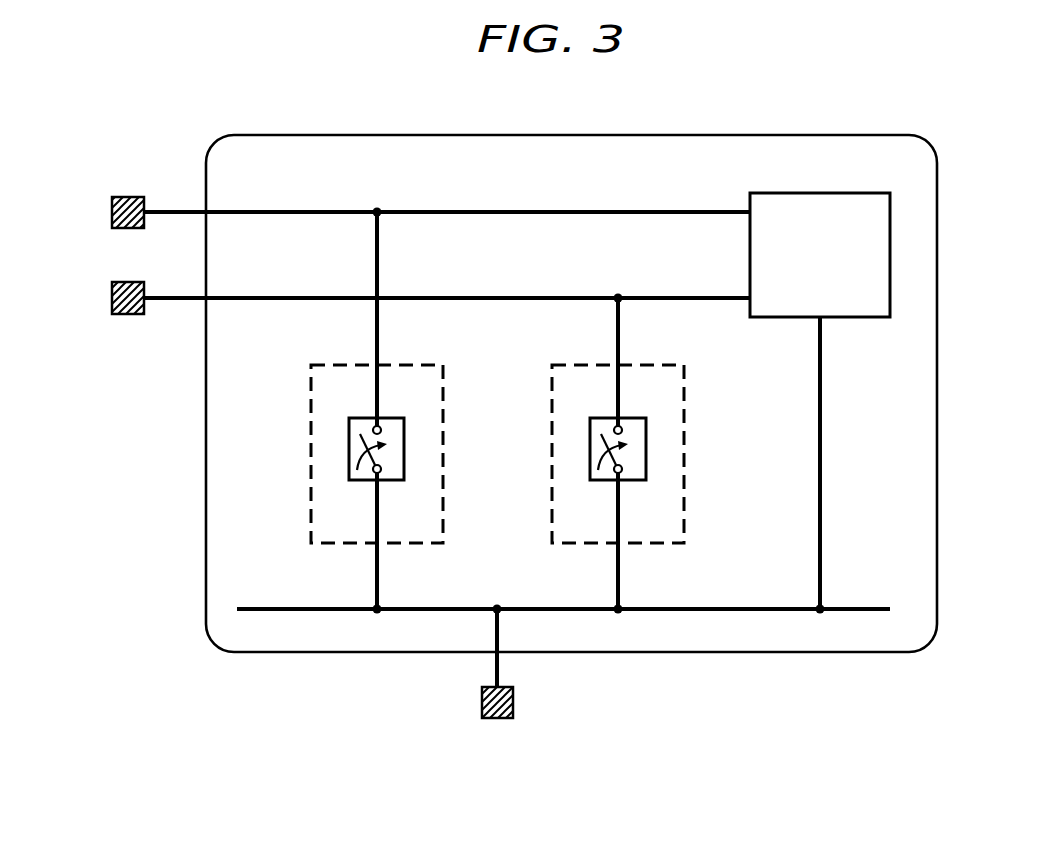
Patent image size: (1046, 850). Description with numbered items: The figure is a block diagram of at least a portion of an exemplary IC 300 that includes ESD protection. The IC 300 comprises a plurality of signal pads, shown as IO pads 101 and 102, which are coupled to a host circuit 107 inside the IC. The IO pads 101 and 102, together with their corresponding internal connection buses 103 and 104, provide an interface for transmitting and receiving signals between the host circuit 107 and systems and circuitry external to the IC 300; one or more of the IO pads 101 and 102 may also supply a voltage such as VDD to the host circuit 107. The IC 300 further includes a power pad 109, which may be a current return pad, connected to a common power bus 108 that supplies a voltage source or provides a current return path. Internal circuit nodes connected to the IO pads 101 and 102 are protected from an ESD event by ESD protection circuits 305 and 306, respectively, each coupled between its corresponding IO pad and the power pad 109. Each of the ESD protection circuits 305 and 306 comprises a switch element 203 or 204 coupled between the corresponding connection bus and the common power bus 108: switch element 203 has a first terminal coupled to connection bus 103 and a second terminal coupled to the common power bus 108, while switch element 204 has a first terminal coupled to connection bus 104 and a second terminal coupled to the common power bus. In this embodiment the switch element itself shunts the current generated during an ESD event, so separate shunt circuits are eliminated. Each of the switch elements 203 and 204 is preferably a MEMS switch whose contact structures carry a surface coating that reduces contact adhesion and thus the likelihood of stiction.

The IC 300 is at (836, 110).
The IO pad 101 is at (112, 212).
The IO pad 102 is at (112, 298).
The internal connection bus 103 is at (498, 212).
The internal connection bus 104 is at (498, 298).
The host circuit 107 is at (827, 193).
The common power bus 108 is at (852, 609).
The power pad 109 is at (515, 703).
The switch element 203 is at (392, 418).
The switch element 204 is at (633, 418).
The ESD protection circuit 305 is at (340, 410).
The ESD protection circuit 306 is at (655, 453).